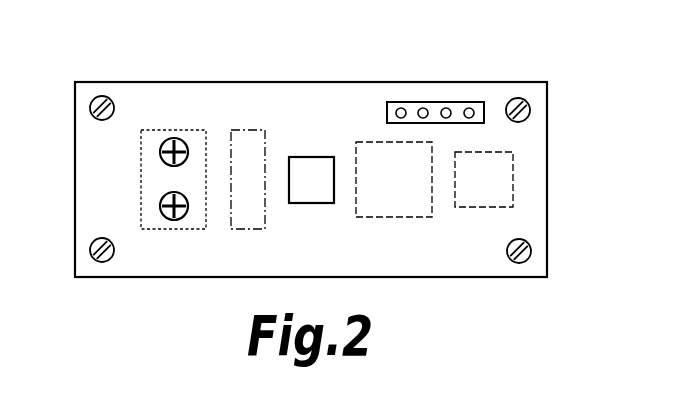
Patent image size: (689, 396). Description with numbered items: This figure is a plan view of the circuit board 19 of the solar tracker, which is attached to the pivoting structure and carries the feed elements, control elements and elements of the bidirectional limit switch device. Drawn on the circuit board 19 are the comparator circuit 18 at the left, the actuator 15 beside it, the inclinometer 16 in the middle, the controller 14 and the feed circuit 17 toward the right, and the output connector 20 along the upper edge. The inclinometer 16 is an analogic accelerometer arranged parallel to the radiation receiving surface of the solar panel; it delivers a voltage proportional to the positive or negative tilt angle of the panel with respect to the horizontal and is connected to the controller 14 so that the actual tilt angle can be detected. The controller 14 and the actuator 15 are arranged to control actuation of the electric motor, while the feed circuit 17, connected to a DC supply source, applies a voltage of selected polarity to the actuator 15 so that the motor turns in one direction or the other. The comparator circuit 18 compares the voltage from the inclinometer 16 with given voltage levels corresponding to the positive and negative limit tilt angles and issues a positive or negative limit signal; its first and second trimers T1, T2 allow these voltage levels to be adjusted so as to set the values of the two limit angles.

The controller 14 is at (395, 218).
The actuator 15 is at (249, 128).
The inclinometer 16 is at (312, 156).
The feed circuit 17 is at (514, 180).
The comparator circuit 18 is at (140, 180).
The circuit board 19 is at (537, 139).
The output connector 20 is at (436, 102).
The first trimer T1 is at (172, 137).
The second trimer T2 is at (173, 221).